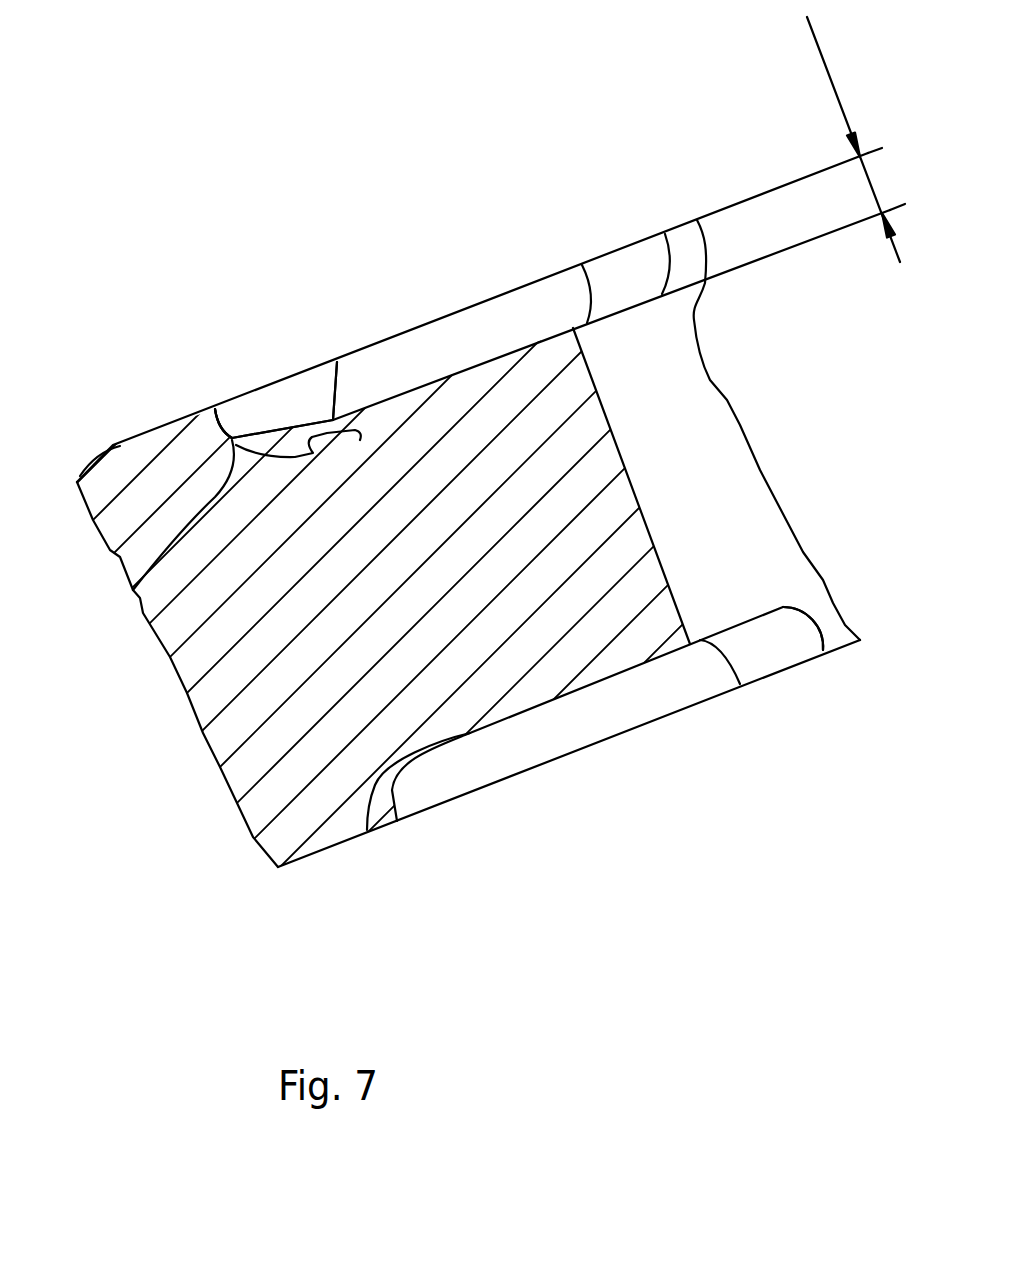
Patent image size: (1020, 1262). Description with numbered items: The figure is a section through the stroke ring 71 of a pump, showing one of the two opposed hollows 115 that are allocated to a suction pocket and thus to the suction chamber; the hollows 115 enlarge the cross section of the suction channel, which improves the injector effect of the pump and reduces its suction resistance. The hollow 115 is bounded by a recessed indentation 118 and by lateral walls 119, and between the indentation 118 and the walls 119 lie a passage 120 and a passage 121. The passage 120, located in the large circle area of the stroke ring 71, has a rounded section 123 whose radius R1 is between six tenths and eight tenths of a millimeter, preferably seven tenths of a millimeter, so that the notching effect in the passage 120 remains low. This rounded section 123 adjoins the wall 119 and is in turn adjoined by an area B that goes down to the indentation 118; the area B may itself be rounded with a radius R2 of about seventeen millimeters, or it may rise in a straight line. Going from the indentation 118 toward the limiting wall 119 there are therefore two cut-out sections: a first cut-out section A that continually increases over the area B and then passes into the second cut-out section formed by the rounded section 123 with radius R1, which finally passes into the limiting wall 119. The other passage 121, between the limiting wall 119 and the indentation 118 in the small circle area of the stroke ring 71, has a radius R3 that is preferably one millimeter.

The stroke ring 71 is at (232, 717).
The hollow 115 is at (491, 306).
The indentation 118 is at (428, 392).
The lateral wall 119 is at (217, 432).
The passage 120 is at (229, 400).
The passage 121 is at (645, 260).
The rounded section 123 is at (132, 593).
The cut-out section A is at (337, 362).
The area B is at (296, 455).
The radius R1 is at (232, 436).
The radius R2 is at (280, 433).
The radius R3 is at (792, 608).